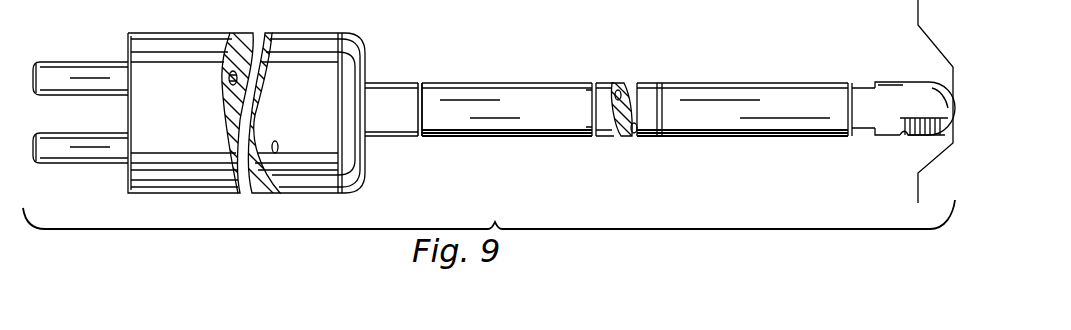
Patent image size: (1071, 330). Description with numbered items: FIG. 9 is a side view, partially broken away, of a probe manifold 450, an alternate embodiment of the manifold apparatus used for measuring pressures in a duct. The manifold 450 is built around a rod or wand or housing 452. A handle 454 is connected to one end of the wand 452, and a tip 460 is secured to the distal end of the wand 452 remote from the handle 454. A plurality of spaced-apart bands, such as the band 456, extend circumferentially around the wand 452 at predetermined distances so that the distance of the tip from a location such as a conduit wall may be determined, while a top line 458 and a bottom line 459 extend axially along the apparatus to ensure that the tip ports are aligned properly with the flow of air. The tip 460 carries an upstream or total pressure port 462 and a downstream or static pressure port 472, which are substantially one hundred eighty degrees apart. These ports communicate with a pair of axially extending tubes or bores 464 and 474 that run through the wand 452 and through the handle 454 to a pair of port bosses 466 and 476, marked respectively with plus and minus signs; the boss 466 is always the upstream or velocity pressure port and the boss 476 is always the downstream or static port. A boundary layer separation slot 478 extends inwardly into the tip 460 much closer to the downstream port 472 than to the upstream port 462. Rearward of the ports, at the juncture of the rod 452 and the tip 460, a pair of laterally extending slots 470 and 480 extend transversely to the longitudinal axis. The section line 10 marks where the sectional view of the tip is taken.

The probe manifold 450 is at (719, 38).
The handle 454 is at (203, 13).
The port boss 466 is at (88, 40).
The port boss 476 is at (88, 163).
The top line 458 is at (540, 50).
The bottom line 459 is at (463, 138).
The band 456 is at (586, 97).
The wand or rod 452 is at (582, 83).
The axially extending tube or bore 464 is at (628, 83).
The axially extending tube or bore 474 is at (636, 128).
The laterally extending slot 470 is at (860, 88).
The laterally extending slot 480 is at (860, 133).
The boundary layer separation slot 478 is at (873, 137).
The downstream or static pressure port 472 is at (917, 152).
The upstream or total pressure port 462 is at (898, 82).
The tip 460 is at (930, 82).
The section line 10- 10 is at (895, 190).